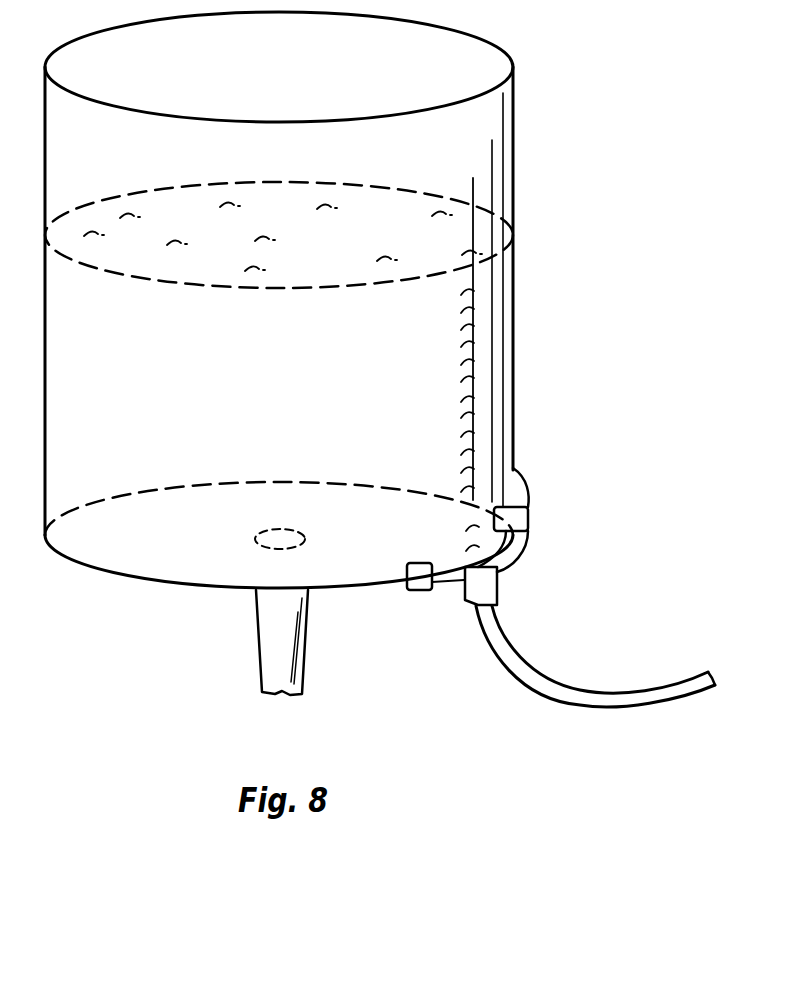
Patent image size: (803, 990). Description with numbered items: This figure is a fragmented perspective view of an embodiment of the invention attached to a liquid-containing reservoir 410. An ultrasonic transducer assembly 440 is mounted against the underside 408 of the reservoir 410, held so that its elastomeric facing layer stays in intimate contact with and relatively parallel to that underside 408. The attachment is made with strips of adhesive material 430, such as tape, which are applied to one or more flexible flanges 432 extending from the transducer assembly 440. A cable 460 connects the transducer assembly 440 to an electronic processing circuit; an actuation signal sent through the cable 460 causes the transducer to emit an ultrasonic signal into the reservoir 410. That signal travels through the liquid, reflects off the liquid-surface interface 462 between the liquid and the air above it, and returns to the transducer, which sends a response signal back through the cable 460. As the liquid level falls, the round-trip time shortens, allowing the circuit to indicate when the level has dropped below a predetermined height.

The reservoir 410 is at (514, 144).
The liquid-surface interface 462 is at (445, 240).
The flexible flanges 432 is at (528, 490).
The strips of adhesive material 430 is at (515, 517).
The transducer assembly 440 is at (487, 587).
The cable 460 is at (552, 682).
The underside 408 is at (364, 590).